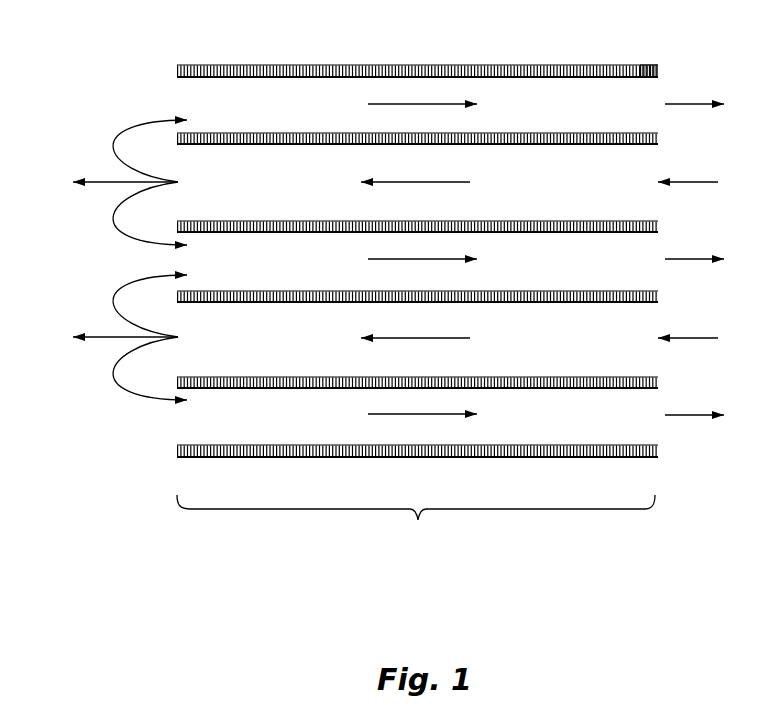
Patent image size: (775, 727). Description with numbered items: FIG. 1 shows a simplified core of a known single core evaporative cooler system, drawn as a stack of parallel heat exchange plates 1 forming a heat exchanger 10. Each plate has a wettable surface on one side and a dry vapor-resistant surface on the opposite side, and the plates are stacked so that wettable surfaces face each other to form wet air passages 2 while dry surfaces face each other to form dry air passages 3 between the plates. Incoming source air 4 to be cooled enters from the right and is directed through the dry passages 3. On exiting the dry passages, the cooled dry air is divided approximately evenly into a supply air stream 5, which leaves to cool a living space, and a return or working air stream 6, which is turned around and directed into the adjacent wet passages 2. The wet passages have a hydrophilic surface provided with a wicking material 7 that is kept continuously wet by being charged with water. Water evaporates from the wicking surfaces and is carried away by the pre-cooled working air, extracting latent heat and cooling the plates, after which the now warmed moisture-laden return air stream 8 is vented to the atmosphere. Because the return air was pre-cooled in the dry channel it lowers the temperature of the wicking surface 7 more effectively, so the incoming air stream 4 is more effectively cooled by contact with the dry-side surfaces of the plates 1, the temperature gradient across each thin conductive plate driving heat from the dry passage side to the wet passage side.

The heat exchange plates 1 is at (267, 64).
The wet air passages 2 is at (238, 415).
The dry air passages 3 is at (512, 182).
The incoming source air 4 is at (549, 260).
The supply air stream 5 is at (117, 259).
The return or working air stream 6 is at (133, 123).
The wicking material 7 is at (650, 76).
The warmed moisture-laden return air stream 8 is at (553, 259).
The heat exchanger 10 is at (416, 521).